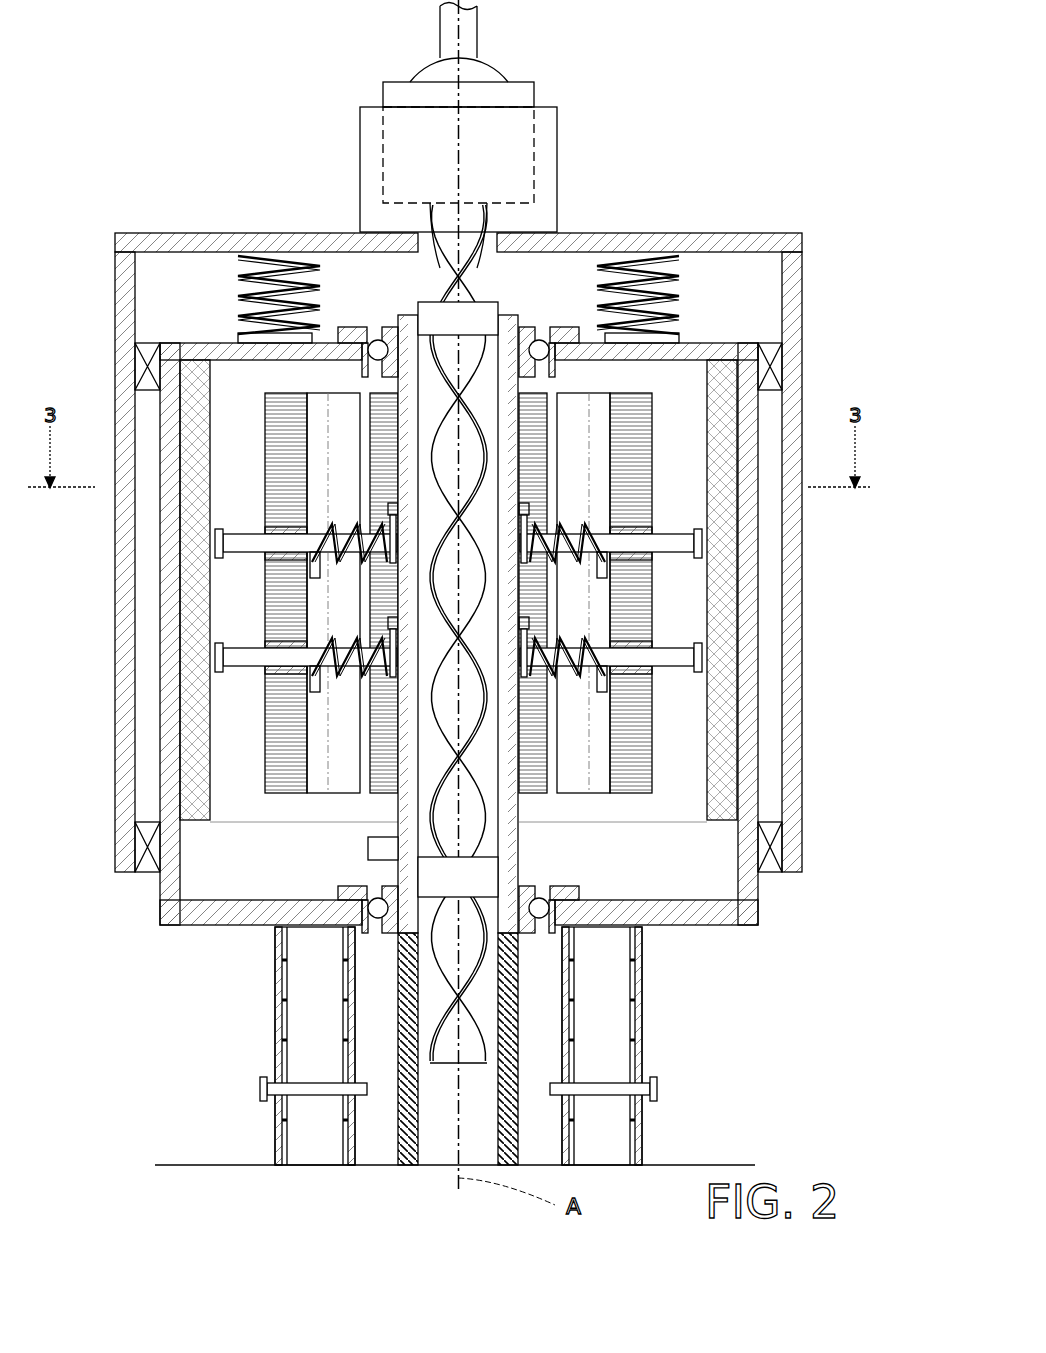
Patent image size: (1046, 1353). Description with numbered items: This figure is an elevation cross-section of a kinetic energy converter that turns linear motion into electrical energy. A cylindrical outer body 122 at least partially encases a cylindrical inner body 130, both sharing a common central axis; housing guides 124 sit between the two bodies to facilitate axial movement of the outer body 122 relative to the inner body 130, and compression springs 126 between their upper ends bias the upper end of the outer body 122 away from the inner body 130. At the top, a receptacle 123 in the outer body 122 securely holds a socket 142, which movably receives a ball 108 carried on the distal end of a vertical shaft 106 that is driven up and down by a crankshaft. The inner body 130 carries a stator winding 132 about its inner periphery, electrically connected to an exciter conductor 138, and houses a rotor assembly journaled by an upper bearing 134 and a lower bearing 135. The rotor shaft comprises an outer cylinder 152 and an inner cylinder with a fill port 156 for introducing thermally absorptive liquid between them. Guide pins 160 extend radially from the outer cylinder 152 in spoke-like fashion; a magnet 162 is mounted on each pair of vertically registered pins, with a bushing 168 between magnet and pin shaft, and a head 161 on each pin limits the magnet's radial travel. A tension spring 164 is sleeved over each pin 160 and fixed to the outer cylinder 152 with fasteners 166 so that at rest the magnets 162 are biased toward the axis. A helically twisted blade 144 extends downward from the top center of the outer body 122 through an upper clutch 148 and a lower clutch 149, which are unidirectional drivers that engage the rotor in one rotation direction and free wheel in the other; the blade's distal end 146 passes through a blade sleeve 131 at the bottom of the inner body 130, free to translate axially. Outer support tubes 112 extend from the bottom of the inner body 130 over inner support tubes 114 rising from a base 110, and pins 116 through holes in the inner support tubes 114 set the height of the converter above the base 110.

The vertical shaft 106 is at (478, 22).
The ball 108 is at (490, 67).
The base 110 is at (755, 1165).
The outer support tube 112 is at (275, 985).
The inner support tube 114 is at (283, 1135).
The pin 116 is at (262, 1082).
The outer body 122 is at (745, 233).
The receptacle 123 is at (557, 172).
The housing guide 124 is at (145, 343).
The compression spring 126 is at (238, 292).
The inner body 130 is at (160, 905).
The blade sleeve 131 is at (398, 1130).
The stator winding 132 is at (210, 790).
The upper bearing 134 is at (365, 327).
The lower bearing 135 is at (350, 886).
The exciter conductor 138 is at (505, 805).
The socket 142 is at (535, 96).
The helically twisted blade 144 is at (487, 222).
The distal end 146 is at (468, 1065).
The upper clutch 148 is at (487, 302).
The lower clutch 149 is at (483, 857).
The outer cylinder 152 is at (398, 805).
The fill port 156 is at (368, 845).
The guide pin 160 is at (232, 533).
The head 161 is at (219, 560).
The magnet 162 is at (278, 393).
The tension spring 164 is at (318, 530).
The fastener 166 is at (388, 503).
The bushing 168 is at (285, 672).